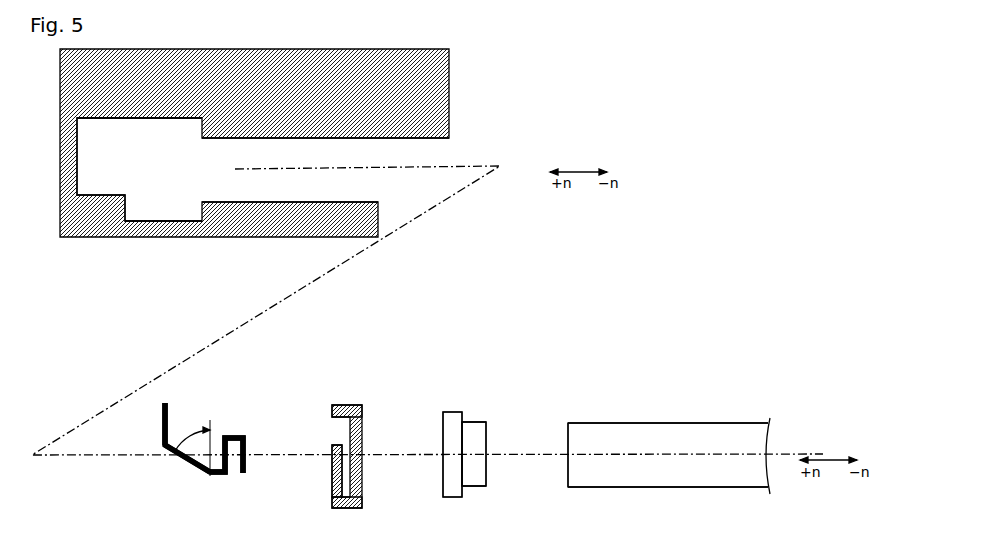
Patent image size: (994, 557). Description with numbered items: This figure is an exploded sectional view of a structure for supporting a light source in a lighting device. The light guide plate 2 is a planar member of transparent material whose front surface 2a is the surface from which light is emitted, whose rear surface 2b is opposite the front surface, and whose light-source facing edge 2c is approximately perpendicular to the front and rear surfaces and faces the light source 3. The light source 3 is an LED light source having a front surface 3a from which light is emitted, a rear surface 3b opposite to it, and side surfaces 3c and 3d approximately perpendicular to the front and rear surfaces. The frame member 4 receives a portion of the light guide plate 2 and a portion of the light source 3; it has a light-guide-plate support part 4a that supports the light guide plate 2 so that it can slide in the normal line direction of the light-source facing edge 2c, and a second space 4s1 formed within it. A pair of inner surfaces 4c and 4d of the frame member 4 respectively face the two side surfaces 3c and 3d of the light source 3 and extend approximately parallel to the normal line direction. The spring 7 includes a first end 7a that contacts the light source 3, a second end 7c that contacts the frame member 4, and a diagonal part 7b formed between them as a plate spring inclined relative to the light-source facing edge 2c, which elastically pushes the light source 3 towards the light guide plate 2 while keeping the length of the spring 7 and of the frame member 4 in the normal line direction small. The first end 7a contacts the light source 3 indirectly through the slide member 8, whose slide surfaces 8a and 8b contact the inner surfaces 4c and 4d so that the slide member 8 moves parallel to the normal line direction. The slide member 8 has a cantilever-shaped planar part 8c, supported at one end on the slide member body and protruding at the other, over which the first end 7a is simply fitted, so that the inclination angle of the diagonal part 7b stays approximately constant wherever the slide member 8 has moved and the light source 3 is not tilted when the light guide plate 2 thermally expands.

The light guide plate 2 is at (757, 422).
The front surface 2a is at (583, 488).
The rear surface 2b is at (583, 422).
The light-source facing edge 2c is at (568, 466).
The light source 3 is at (488, 353).
The front surface 3a is at (487, 447).
The rear surface 3b is at (443, 466).
The side surface 3c is at (465, 488).
The side surface 3d is at (474, 422).
The frame member 4 is at (451, 121).
The light-guide-plate support part 4a is at (240, 137).
The inner surface 4c is at (128, 221).
The inner surface 4d is at (132, 120).
The second space 4s1 is at (134, 174).
The spring 7 is at (211, 407).
The first end 7a is at (247, 489).
The diagonal part 7b is at (183, 470).
The second end 7c is at (153, 445).
The slide member 8 is at (387, 353).
The slide surface 8a is at (358, 509).
The slide surface 8b is at (351, 405).
The planar part 8c is at (333, 461).